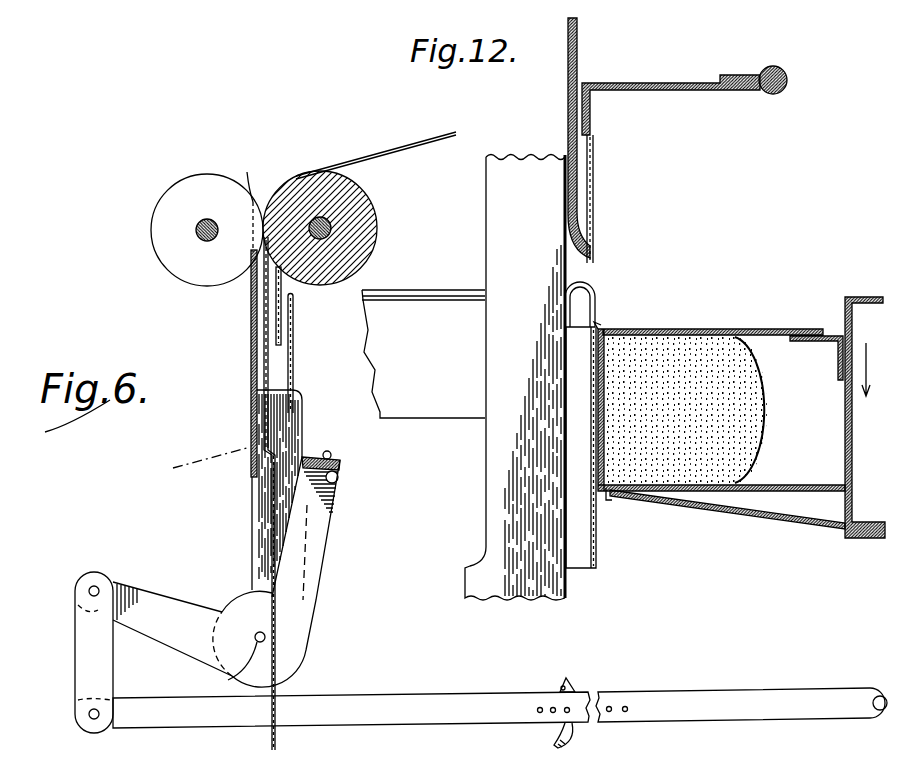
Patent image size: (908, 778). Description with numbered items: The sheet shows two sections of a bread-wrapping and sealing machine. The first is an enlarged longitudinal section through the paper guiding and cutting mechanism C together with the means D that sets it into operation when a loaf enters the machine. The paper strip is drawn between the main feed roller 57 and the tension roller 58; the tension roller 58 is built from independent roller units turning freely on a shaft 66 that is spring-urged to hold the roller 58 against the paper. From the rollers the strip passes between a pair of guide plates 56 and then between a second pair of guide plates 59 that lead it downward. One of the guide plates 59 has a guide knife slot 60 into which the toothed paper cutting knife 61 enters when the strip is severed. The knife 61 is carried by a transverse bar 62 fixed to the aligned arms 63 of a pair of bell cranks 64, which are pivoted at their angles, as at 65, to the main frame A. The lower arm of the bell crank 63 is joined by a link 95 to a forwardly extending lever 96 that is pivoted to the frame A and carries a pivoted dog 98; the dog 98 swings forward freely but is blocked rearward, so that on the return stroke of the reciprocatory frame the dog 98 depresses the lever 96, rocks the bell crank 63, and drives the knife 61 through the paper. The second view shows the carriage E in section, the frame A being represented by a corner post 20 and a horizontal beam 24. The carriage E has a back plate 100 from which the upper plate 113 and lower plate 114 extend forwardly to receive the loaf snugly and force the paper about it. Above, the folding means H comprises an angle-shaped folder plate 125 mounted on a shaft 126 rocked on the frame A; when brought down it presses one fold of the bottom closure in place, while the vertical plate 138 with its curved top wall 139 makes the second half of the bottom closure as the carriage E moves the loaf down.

In FIG. 6, the guide plates 56 is at (280, 293).
In FIG. 6, the main feed roller 57 is at (367, 234).
In FIG. 6, the tension roller 58 is at (223, 190).
In FIG. 6, the second pair of guide plates 59 is at (288, 363).
In FIG. 6, the guide knife slot 60 is at (255, 448).
In FIG. 6, the paper cutting knife 61 is at (322, 453).
In FIG. 6, the transverse bar 62 is at (343, 478).
In FIG. 6, the arms of bell cranks 63 is at (310, 568).
In FIG. 6, the bell cranks 64 is at (306, 610).
In FIG. 6, the pivot 65 is at (232, 678).
In FIG. 6, the shaft 66 is at (203, 242).
In FIG. 6, the link 95 is at (103, 682).
In FIG. 6, the lever 96 is at (470, 693).
In FIG. 6, the pivoted dog 98 is at (572, 688).
In FIG. 6, the paper guiding and cutting mechanism C is at (166, 196).
In FIG. 6, the means for setting the paper-cutting mechanism into operation D is at (686, 698).
In FIG. 12, the corner posts 20 is at (494, 267).
In FIG. 12, the horizontally extending beam 24 is at (455, 407).
In FIG. 12, the back plate 100 is at (853, 437).
In FIG. 12, the upper plate 113 is at (698, 330).
In FIG. 12, the lower plate 114 is at (792, 490).
In FIG. 12, the angle-shaped folder plate 125 is at (684, 92).
In FIG. 12, the shaft 126 is at (789, 82).
In FIG. 12, the plate 138 is at (575, 334).
In FIG. 12, the curved top wall 139 is at (597, 292).
In FIG. 12, the frame A is at (511, 165).
In FIG. 12, the carriage E is at (786, 326).
In FIG. 12, the means for folding the paper H is at (660, 58).